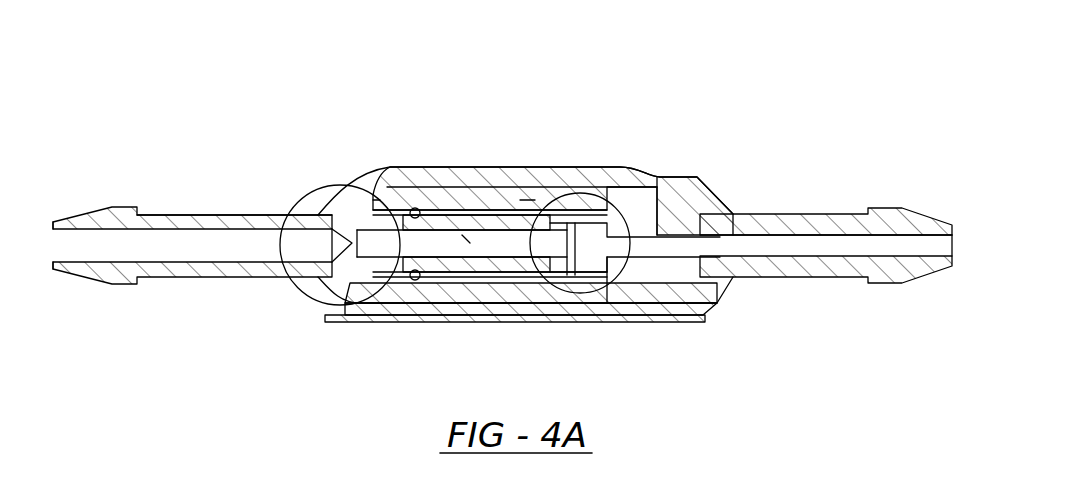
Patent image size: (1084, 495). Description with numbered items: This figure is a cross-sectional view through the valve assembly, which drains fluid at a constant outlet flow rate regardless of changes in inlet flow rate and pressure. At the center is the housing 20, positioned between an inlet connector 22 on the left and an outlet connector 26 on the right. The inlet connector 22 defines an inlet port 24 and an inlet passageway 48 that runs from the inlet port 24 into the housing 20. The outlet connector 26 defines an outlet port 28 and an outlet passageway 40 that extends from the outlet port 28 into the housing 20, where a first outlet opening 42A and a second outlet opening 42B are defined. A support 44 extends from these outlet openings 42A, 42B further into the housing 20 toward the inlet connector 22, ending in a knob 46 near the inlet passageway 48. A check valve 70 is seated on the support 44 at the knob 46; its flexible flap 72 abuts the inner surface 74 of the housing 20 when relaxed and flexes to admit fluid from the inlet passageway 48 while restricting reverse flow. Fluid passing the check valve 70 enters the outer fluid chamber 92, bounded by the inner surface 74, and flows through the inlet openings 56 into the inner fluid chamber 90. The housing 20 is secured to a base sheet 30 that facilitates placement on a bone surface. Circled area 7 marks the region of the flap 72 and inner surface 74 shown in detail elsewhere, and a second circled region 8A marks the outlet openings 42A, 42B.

The area 7 is at (317, 186).
The detail view circle 8A is at (575, 292).
The housing 20 is at (567, 185).
The inlet connector 22 is at (168, 214).
The inlet port 24 is at (52, 262).
The outlet connector 26 is at (840, 213).
The outlet port 28 is at (957, 258).
The base sheet 30 is at (350, 322).
The outlet passageway 40 is at (778, 236).
The first outlet opening 42A is at (580, 223).
The second outlet opening 42B is at (592, 265).
The support 44 is at (483, 250).
The knob 46 is at (352, 250).
The inlet passageway 48 is at (238, 237).
The inlet openings 56 is at (416, 208).
The check valve 70 is at (338, 197).
The flexible flap 72 is at (377, 197).
The inner surface 74 is at (494, 193).
The inner fluid chamber 90 is at (462, 222).
The outer fluid chamber 92 is at (536, 193).